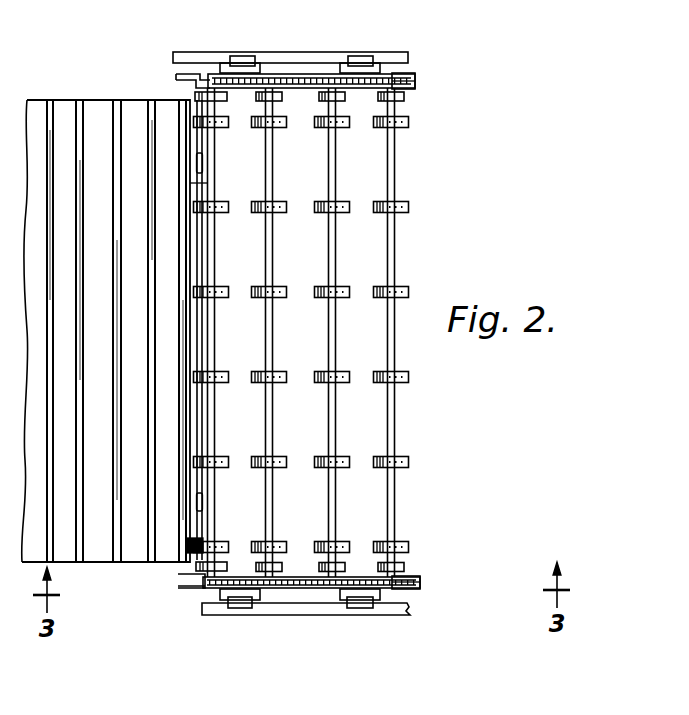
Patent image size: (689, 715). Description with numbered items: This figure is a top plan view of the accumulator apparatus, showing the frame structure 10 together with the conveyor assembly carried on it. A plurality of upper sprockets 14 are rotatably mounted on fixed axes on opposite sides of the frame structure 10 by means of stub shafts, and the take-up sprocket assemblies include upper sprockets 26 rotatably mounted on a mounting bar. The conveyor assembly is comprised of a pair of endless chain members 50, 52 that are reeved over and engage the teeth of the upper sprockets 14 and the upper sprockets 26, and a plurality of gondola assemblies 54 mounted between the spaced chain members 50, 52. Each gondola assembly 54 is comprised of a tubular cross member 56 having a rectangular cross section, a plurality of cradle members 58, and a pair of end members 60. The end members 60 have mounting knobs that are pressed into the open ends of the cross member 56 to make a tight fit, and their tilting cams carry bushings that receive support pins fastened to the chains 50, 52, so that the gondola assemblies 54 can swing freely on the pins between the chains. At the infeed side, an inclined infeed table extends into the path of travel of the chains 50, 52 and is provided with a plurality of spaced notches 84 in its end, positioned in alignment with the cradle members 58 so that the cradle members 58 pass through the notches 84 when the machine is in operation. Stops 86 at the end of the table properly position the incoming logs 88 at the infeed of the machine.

The frame structure 10 is at (184, 50).
The upper sprockets 14 is at (200, 77).
The upper sprockets 26 is at (303, 80).
The endless chain member 50 is at (308, 82).
The endless chain member 52 is at (412, 583).
The gondola assemblies 54 is at (190, 183).
The tubular cross member 56 is at (272, 240).
The cradle members 58 is at (402, 200).
The end members 60 is at (205, 95).
The notches 84 is at (200, 362).
The stops 86 is at (204, 168).
The logs 88 is at (62, 118).